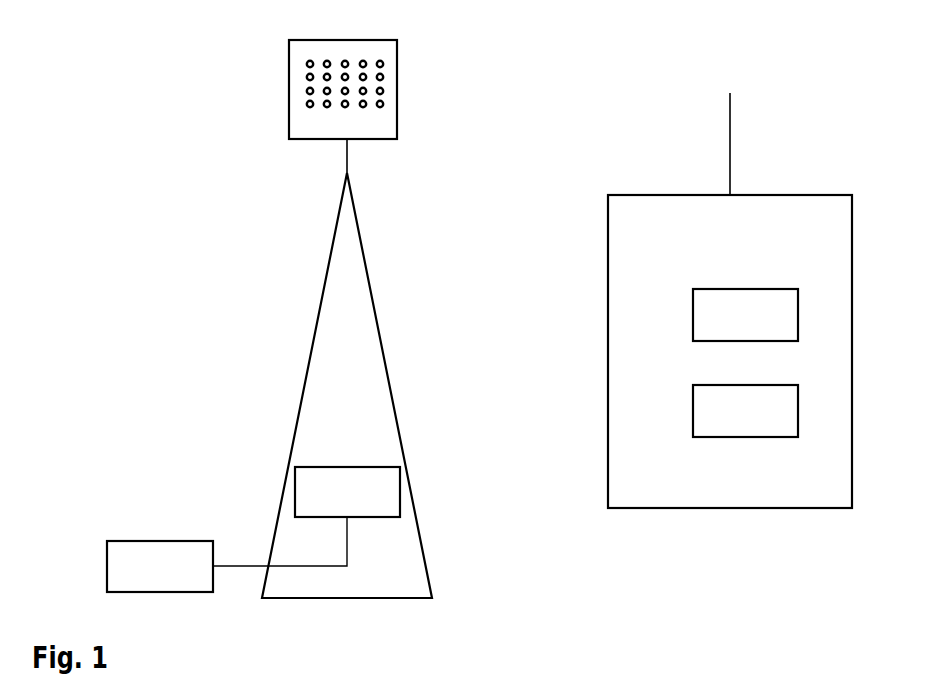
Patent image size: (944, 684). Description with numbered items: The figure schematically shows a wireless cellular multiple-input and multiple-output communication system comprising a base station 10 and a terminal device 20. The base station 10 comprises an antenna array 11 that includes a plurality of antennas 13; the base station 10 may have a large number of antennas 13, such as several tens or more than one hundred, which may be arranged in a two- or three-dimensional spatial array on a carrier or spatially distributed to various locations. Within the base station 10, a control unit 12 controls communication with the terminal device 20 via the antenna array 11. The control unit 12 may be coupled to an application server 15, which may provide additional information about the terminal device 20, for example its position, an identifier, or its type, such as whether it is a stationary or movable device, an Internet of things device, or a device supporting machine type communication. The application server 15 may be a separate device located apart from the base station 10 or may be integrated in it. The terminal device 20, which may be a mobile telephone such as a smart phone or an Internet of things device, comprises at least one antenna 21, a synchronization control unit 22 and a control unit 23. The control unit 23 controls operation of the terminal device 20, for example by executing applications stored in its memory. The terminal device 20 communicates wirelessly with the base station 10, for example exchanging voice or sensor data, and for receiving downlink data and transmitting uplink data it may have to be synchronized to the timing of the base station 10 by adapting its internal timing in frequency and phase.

The base station 10 is at (313, 344).
The antenna array 11 is at (289, 93).
The control unit 12 is at (295, 503).
The antennas 13 is at (387, 69).
The application server 15 is at (107, 548).
The terminal device 20 is at (607, 247).
The antenna 21 is at (732, 132).
The synchronization control unit 22 is at (692, 298).
The control unit 23 is at (692, 410).